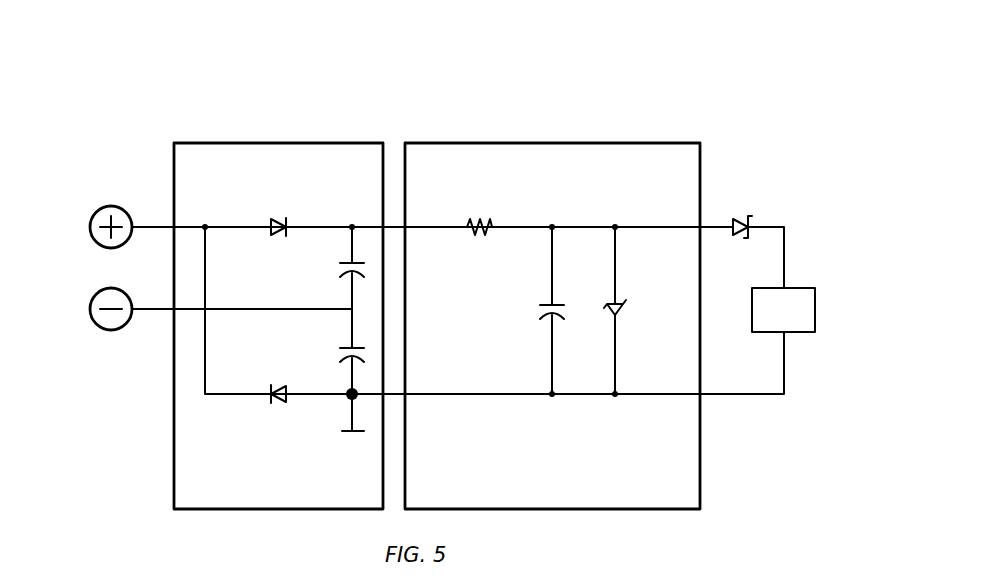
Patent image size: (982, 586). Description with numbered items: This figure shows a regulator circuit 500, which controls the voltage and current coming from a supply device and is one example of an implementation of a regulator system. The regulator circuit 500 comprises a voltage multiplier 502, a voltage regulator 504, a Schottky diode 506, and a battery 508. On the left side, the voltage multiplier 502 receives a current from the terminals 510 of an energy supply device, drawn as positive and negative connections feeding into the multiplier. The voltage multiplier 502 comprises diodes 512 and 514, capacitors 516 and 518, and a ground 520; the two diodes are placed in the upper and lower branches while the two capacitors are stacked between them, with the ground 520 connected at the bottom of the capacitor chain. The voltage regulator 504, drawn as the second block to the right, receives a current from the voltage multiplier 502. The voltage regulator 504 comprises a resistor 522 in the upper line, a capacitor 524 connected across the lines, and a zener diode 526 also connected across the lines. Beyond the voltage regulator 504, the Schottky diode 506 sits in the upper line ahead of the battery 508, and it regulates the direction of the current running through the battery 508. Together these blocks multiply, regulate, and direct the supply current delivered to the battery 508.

The regulator circuit 500 is at (357, 78).
The voltage multiplier 502 is at (238, 136).
The voltage regulator 504 is at (584, 136).
The Schottky diode 506 is at (742, 217).
The battery 508 is at (815, 308).
The terminals 510 is at (96, 211).
The diode 512 is at (278, 217).
The diode 514 is at (278, 404).
The capacitor 516 is at (340, 268).
The capacitor 518 is at (340, 349).
The ground 520 is at (348, 433).
The resistor 522 is at (472, 217).
The capacitor 524 is at (540, 309).
The zener diode 526 is at (625, 306).